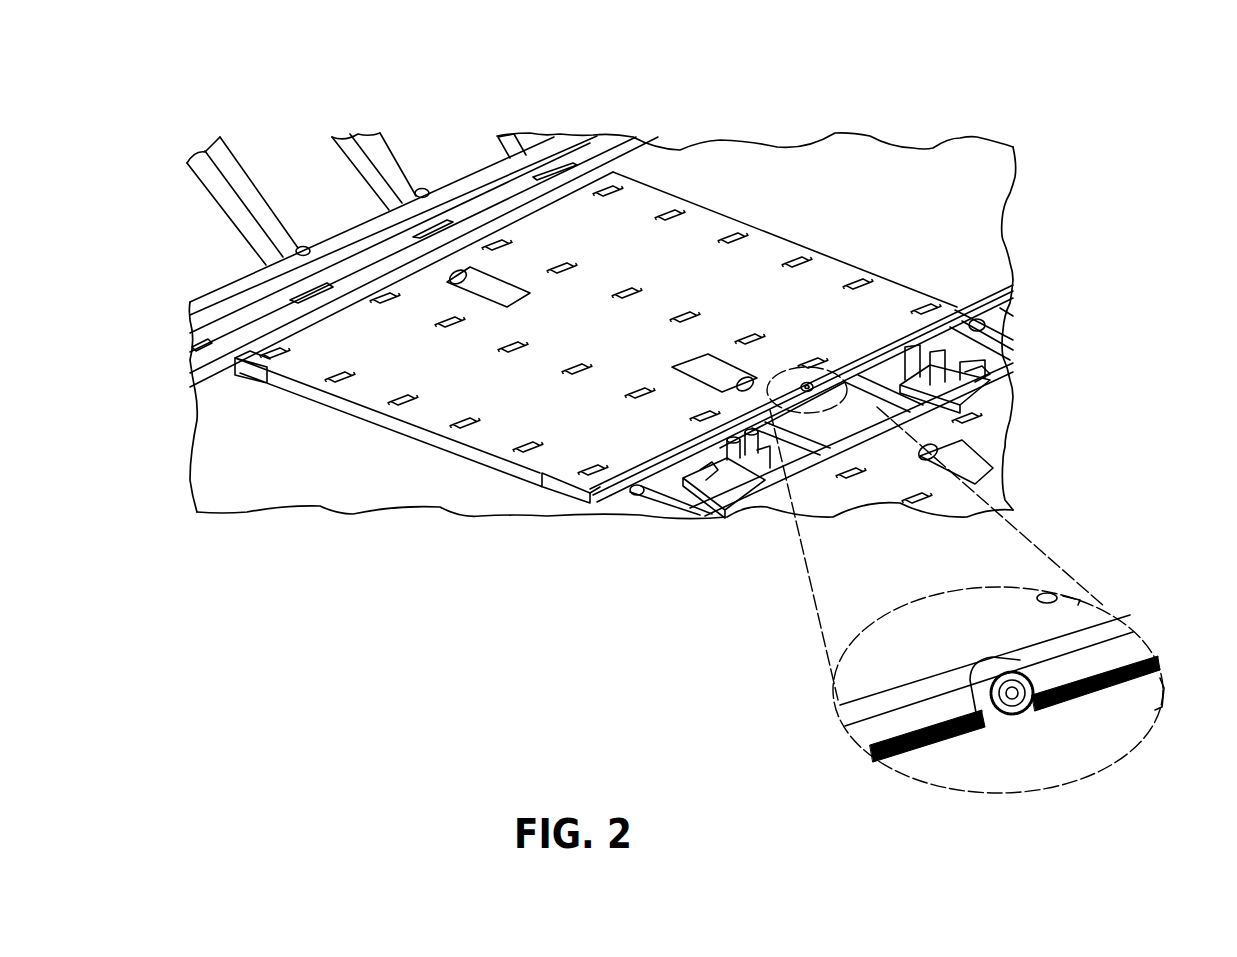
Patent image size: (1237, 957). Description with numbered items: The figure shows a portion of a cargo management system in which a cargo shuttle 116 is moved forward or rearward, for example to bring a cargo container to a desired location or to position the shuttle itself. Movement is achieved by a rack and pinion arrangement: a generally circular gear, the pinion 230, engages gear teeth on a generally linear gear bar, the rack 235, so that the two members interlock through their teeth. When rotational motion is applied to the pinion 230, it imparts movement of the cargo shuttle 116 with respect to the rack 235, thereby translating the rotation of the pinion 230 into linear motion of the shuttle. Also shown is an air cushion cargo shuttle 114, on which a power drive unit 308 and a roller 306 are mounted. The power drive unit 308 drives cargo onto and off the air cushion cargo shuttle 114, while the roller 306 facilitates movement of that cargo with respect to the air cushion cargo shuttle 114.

The air cushion cargo shuttle 114 is at (997, 425).
The cargo shuttle 116 is at (826, 270).
The pinion 230 is at (441, 249).
The rack 235 is at (577, 505).
The roller 306 is at (756, 333).
The power drive unit 308 is at (704, 360).